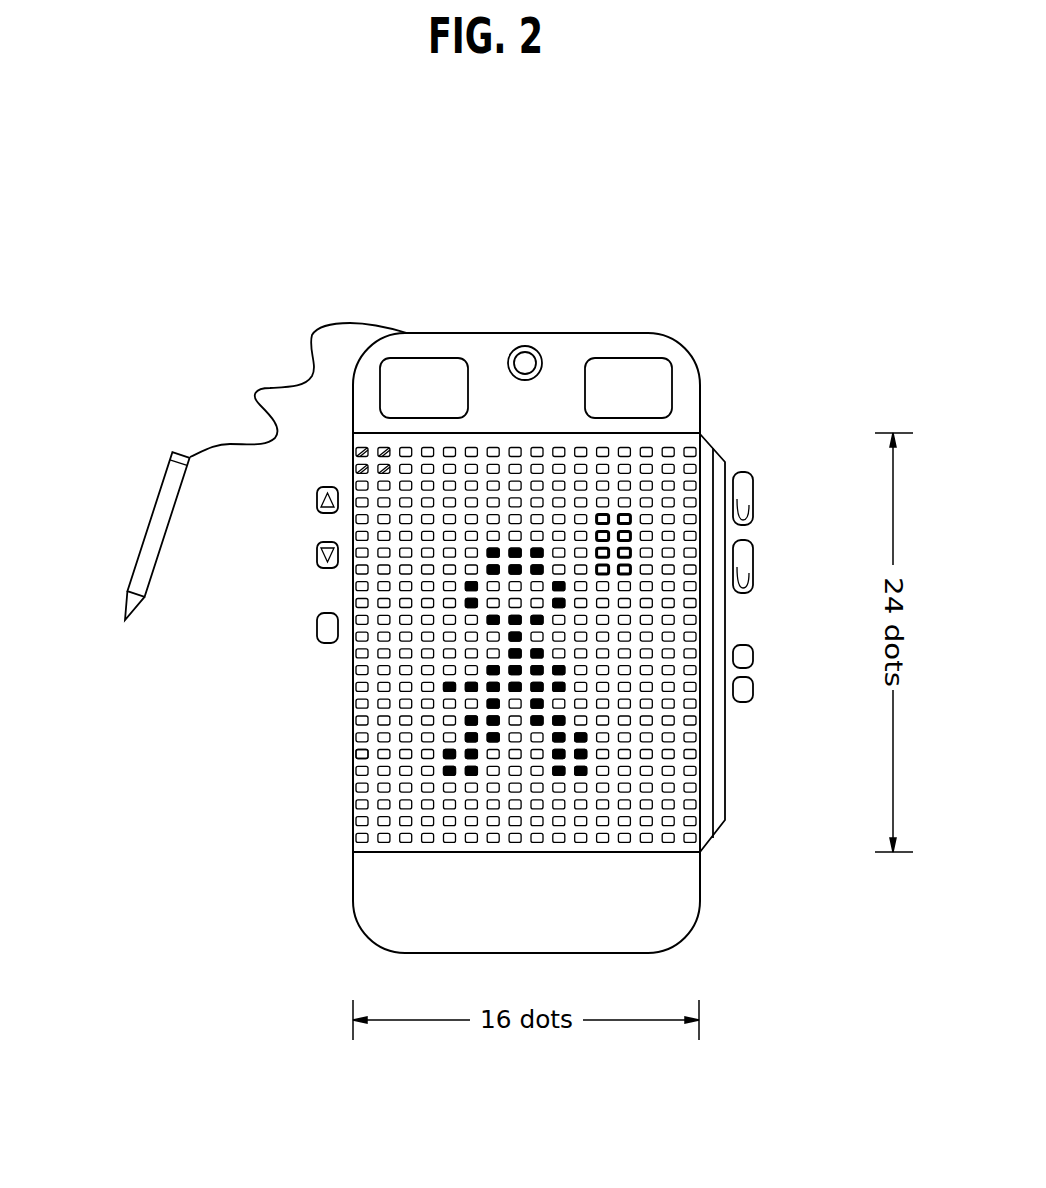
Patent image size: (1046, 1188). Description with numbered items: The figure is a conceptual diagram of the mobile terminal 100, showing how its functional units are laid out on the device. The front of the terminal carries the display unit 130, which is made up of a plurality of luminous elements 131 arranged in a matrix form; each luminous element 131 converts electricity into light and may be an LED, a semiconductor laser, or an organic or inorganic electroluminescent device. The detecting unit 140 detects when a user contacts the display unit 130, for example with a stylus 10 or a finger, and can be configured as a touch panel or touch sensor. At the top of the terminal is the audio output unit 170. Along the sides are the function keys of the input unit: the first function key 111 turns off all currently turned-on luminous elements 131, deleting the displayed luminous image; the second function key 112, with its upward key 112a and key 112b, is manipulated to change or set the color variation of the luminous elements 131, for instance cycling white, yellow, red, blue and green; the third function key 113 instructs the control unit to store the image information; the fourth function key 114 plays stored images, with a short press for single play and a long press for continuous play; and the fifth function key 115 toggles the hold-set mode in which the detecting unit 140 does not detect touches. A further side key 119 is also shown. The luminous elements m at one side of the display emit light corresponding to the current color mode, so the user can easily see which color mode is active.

The mobile terminal 100 is at (366, 259).
The stylus 10 is at (157, 520).
The audio output unit 170 is at (442, 363).
The detecting unit 140 is at (703, 448).
The side button 119 is at (743, 487).
The fifth function key 115 is at (743, 555).
The third function key 113 is at (743, 656).
The fourth function key 114 is at (743, 690).
The second function key 112 is at (258, 528).
The upward key 112a is at (317, 500).
The function key 112b is at (317, 555).
The first function key 111 is at (317, 627).
The display unit 130 is at (472, 642).
The luminous element 131 is at (358, 753).
The luminous elements "m" m is at (345, 446).